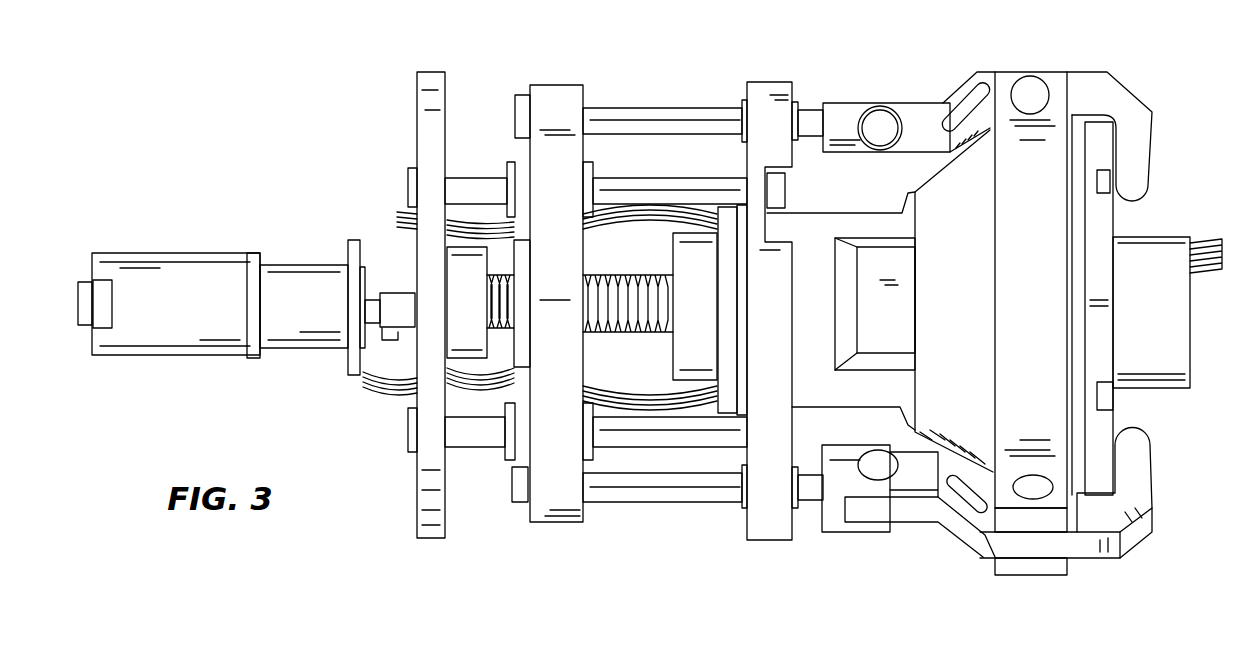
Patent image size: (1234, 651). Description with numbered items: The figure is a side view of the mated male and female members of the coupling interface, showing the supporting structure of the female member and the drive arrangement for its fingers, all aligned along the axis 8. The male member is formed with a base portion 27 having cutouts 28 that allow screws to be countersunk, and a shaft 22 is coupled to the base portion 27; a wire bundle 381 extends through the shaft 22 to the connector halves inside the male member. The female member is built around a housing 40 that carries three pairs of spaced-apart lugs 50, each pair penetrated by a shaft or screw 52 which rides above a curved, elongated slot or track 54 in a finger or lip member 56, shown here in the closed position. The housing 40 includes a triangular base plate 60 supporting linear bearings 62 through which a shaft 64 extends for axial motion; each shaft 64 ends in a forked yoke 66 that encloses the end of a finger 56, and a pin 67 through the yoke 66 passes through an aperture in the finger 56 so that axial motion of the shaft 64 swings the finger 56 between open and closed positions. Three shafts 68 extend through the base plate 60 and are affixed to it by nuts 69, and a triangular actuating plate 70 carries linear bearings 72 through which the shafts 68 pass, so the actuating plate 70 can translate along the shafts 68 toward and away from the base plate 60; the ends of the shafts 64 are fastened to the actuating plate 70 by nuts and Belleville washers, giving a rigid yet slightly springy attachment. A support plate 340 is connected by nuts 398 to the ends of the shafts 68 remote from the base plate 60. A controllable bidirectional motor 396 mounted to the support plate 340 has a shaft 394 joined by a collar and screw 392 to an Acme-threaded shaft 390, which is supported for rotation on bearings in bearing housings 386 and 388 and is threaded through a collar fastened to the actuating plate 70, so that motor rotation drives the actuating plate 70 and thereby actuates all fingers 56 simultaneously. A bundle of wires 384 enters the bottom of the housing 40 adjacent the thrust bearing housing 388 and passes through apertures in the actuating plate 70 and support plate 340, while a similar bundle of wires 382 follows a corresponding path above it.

The axis 8 is at (42, 300).
The shaft 22 is at (1168, 387).
The base portion 27 is at (1100, 218).
The cutouts 28 is at (1110, 180).
The housing 40 is at (830, 230).
The lugs 50 is at (1003, 80).
The shaft or screw 52 is at (1040, 85).
The slot or track 54 is at (967, 98).
The finger or lip member 56 is at (1120, 95).
The base plate 60 is at (765, 88).
The linear bearing 62 is at (795, 108).
The shaft 64 is at (660, 118).
The forked yoke 66 is at (848, 105).
The pin 67 is at (882, 118).
The shafts 68 is at (730, 192).
The nuts 69 is at (785, 188).
The actuating plate 70 is at (552, 92).
The linear bearings 72 is at (510, 163).
The support plate 340 is at (430, 538).
The wire bundle 381 is at (1212, 271).
The bundle of wires 382 is at (400, 218).
The bundle of wires 384 is at (633, 400).
The bearing housing 386 is at (470, 250).
The thrust bearing housing 388 is at (690, 235).
The threaded shaft 390 is at (625, 275).
The collar and screw 392 is at (398, 291).
The shaft 394 is at (364, 287).
The motor 396 is at (305, 262).
The nuts 398 is at (410, 186).